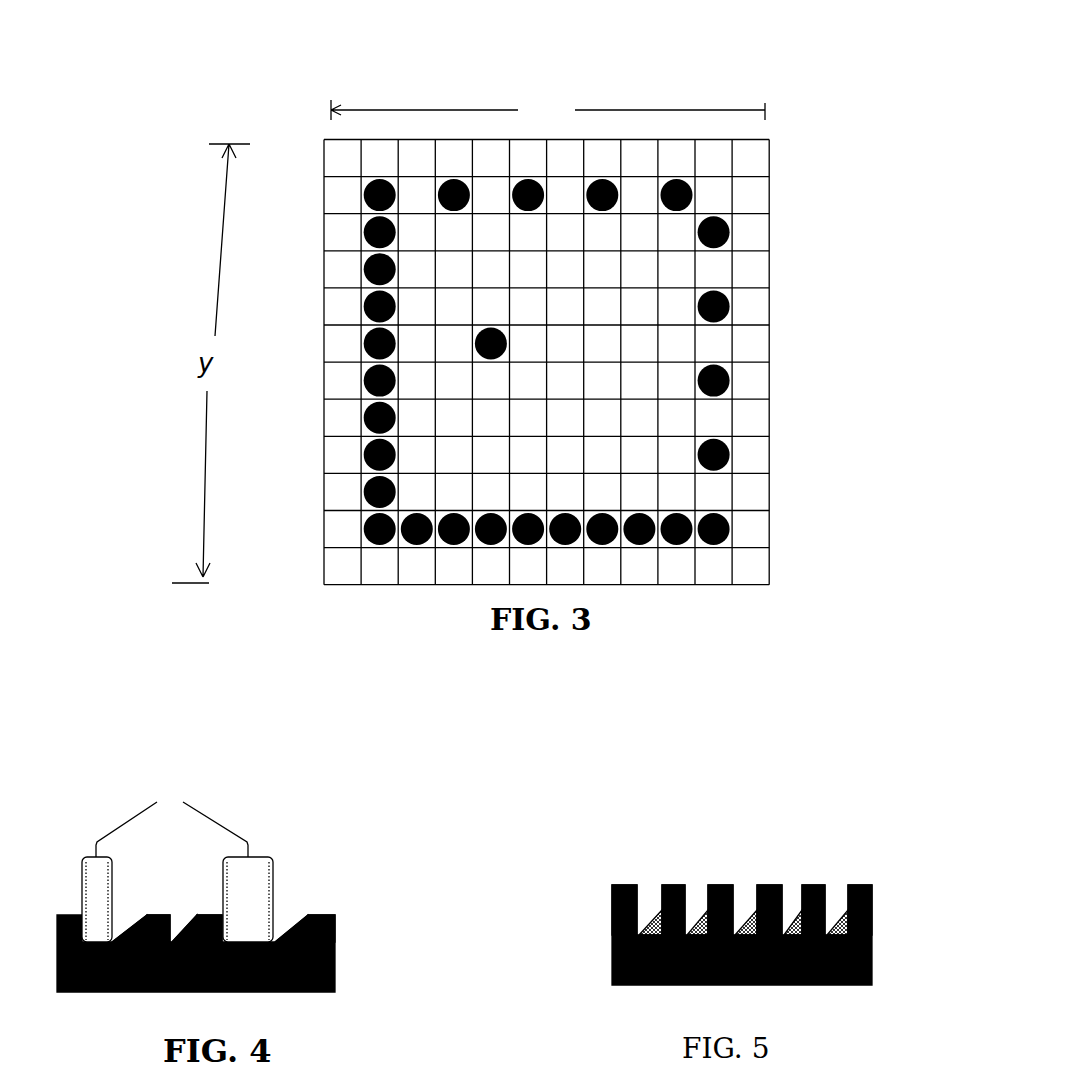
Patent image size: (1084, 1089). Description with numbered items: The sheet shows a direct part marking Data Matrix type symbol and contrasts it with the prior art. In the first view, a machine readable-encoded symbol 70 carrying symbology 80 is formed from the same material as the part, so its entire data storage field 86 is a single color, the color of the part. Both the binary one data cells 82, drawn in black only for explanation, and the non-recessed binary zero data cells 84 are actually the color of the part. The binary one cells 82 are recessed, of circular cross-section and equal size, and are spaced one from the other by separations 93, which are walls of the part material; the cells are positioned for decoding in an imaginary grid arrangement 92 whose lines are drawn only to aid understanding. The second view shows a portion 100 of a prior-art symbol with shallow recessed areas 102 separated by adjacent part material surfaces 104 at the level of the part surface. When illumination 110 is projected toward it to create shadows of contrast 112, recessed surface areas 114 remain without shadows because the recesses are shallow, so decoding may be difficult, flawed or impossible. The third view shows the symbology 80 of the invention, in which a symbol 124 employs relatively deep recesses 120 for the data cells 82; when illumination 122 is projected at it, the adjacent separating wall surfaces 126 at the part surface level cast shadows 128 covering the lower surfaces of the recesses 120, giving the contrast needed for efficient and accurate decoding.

In FIG. 3, the machine readable-encoded symbol 70 is at (461, 113).
In FIG. 3, the symbology 80 is at (700, 160).
In FIG. 5, the symbology 80 is at (892, 883).
In FIG. 3, the binary 1 data cells 82 is at (520, 422).
In FIG. 5, the binary 1 data cells 82 is at (733, 887).
In FIG. 3, the binary 0 data cells 84 is at (635, 452).
In FIG. 3, the data storage field 86 is at (648, 347).
In FIG. 3, the imaginary grid arrangement 92 is at (757, 277).
In FIG. 3, the separations 93 is at (433, 544).
In FIG. 4, the portion of an encoded symbol 100 is at (307, 872).
In FIG. 4, the recessed areas 102 is at (210, 858).
In FIG. 4, the part material surfaces 104 is at (207, 912).
In FIG. 4, the illumination 110 is at (303, 889).
In FIG. 4, the shadows of contrast 112 is at (137, 928).
In FIG. 4, the recessed surface areas 114 is at (172, 816).
In FIG. 5, the deep recesses 120 is at (714, 882).
In FIG. 5, the illumination 122 is at (648, 887).
In FIG. 5, the symbol 124 is at (608, 928).
In FIG. 5, the separating wall surfaces 126 is at (685, 877).
In FIG. 5, the shadows 128 is at (638, 985).